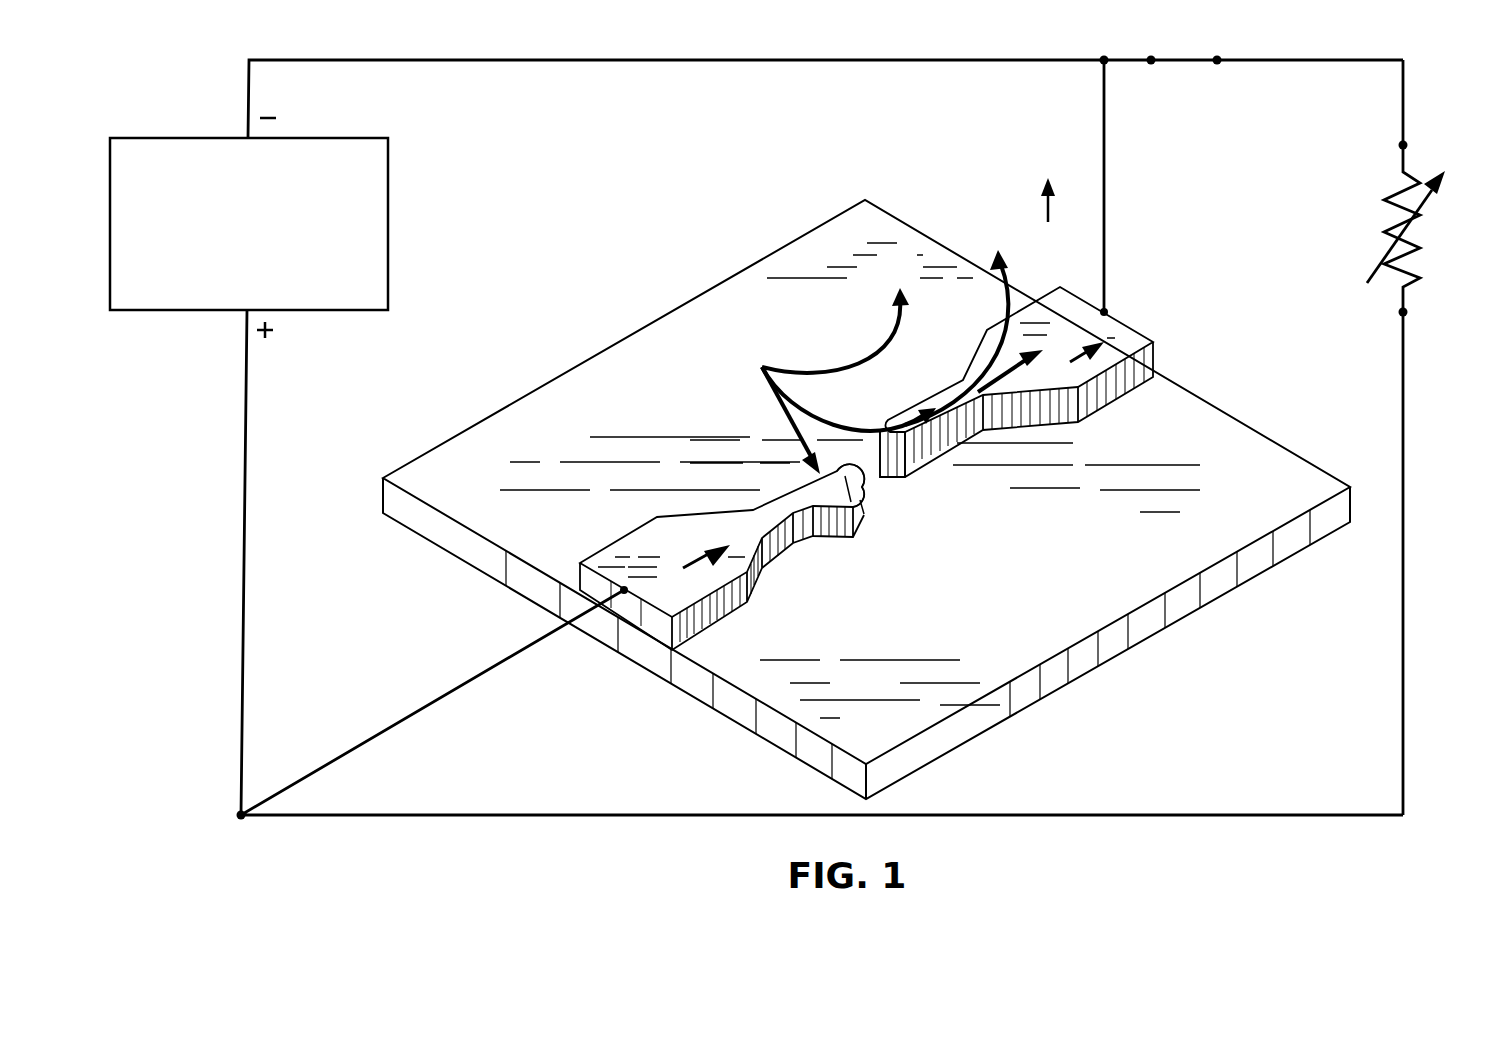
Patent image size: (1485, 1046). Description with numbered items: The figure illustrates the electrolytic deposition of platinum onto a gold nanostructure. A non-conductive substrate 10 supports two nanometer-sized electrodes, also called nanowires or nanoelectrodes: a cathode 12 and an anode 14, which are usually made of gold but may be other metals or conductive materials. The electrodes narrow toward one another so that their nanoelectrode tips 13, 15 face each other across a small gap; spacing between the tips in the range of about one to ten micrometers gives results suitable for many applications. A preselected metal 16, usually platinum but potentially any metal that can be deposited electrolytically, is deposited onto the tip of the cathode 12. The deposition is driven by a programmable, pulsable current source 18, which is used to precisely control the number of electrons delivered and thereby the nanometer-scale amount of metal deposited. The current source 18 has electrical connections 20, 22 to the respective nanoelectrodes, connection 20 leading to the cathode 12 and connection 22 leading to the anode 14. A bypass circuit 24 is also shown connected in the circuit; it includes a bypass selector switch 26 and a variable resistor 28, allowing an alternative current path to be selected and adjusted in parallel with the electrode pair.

The non-conductive substrate 10 is at (1173, 623).
The cathode 12 is at (666, 596).
The nanoelectrode tip 13 is at (815, 510).
The anode 14 is at (1127, 327).
The nanoelectrode tip 15 is at (890, 457).
The preselected metal 16 is at (800, 473).
The programmable pulsing current source 18 is at (388, 212).
The electrical connection 20 is at (246, 440).
The electrical connection 22 is at (683, 60).
The bypass circuit 24 is at (1400, 368).
The bypass selector switch 26 is at (1170, 62).
The variable resistor 28 is at (1385, 200).